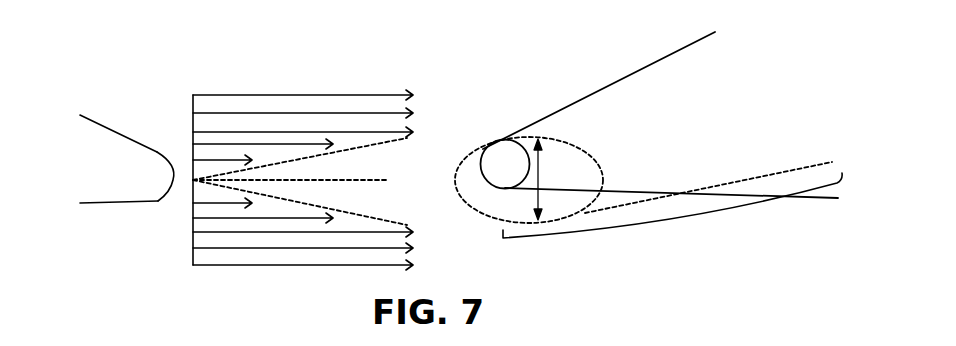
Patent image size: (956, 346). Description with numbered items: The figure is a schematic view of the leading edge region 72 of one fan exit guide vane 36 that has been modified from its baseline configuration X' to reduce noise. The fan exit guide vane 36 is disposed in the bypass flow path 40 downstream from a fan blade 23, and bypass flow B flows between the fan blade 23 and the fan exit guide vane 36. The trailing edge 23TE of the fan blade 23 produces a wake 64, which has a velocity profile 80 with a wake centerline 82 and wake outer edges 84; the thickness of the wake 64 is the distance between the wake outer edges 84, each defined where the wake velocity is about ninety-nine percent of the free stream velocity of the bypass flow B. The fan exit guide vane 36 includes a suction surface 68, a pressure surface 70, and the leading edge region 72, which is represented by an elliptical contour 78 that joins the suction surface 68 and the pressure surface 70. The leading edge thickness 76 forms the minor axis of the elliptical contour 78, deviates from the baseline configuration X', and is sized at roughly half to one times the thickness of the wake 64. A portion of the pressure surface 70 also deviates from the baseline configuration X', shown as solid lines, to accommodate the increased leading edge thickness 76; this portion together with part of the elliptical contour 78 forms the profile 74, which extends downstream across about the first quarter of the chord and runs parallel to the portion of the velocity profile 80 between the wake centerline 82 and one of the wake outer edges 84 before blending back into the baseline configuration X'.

The fan blade 23 is at (127, 168).
The trailing edge of fan blade 23TE is at (158, 196).
The bypass flow B is at (290, 95).
The wake centerline 82 is at (316, 181).
The wake outer edges 84 is at (418, 113).
The wake 64 is at (322, 237).
The velocity profile 80 is at (350, 221).
The leading edge region 72 is at (458, 149).
The elliptical contour 78 is at (589, 154).
The leading edge thickness 76 is at (540, 182).
The suction surface 68 is at (626, 61).
The fan exit guide vane 36 is at (697, 108).
The baseline configuration X' is at (671, 215).
The pressure surface 70 is at (775, 166).
The profile 74 is at (684, 217).
The bypass flow path 40 is at (620, 276).